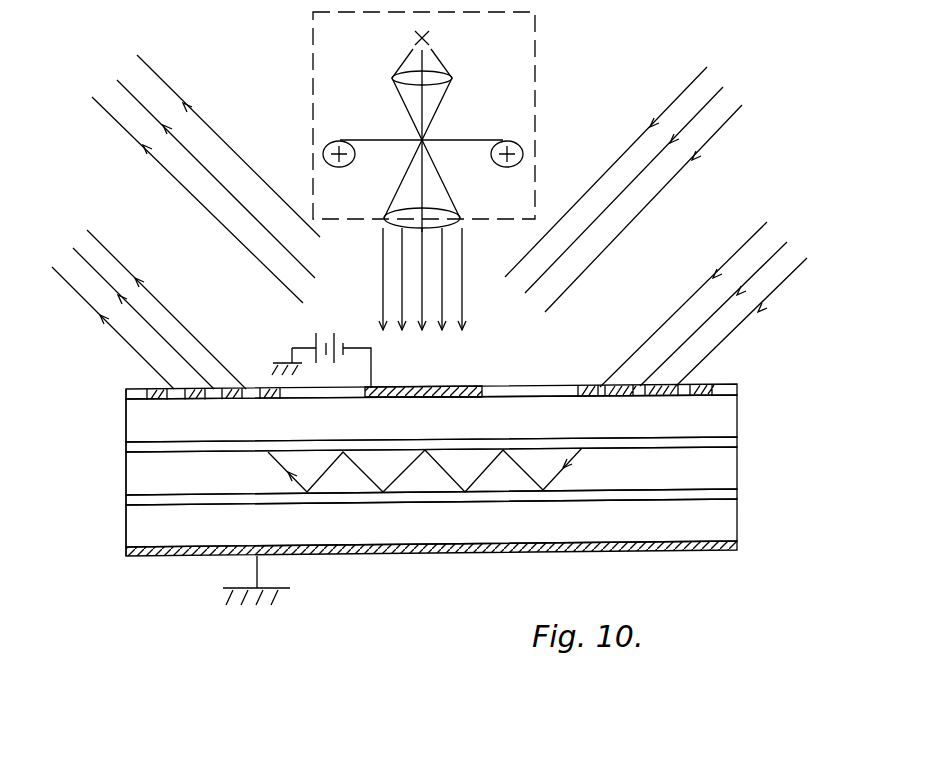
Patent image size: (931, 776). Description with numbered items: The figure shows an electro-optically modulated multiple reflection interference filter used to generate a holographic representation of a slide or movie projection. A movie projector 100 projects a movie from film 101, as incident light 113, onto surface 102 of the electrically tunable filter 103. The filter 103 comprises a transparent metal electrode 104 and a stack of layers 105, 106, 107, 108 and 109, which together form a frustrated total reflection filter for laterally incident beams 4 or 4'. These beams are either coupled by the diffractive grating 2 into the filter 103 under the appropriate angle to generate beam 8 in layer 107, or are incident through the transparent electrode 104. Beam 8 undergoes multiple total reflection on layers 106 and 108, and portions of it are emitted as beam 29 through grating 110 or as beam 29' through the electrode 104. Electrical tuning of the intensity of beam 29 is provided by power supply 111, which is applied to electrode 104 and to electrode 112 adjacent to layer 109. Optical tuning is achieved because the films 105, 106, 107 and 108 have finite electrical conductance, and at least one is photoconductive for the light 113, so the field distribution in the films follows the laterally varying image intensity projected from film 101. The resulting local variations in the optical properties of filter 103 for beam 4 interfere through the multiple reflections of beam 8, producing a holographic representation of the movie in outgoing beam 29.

The movie projector 100 is at (523, 63).
The film 101 is at (381, 140).
The incident light 113 is at (472, 336).
The power supply 111 is at (321, 350).
The surface 102 is at (464, 378).
The transparent metal electrode 104 is at (475, 387).
The grating 110 is at (157, 389).
The diffractive grating 2 is at (710, 382).
The layer 105 is at (727, 421).
The layer 106 is at (733, 444).
The layer 107 is at (728, 475).
The layer 108 is at (738, 494).
The layer 109 is at (728, 522).
The electrode 112 is at (351, 554).
The beam 8 is at (438, 462).
The electrically tunable filter 103 is at (105, 390).
The beam 29' is at (196, 177).
The beam 29 is at (136, 305).
The laterally incident beam 4' is at (632, 180).
The laterally incident beam 4 is at (710, 294).